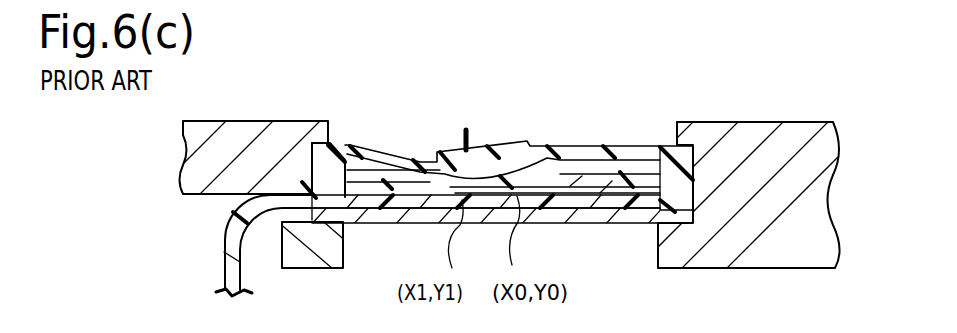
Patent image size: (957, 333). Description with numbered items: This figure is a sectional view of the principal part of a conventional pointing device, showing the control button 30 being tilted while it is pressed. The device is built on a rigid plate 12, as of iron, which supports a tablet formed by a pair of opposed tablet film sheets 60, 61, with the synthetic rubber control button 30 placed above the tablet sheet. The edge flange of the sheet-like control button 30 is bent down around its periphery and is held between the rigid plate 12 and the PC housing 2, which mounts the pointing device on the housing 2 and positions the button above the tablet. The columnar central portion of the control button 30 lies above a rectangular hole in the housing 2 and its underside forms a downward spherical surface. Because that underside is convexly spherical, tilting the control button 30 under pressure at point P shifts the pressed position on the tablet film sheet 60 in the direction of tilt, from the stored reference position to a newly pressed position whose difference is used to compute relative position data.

The PC housing 2 is at (760, 138).
The rigid plate 12 is at (380, 214).
The control button 30 is at (524, 141).
The tablet film sheet 60 is at (623, 150).
The tablet film sheet 61 is at (603, 205).
The pressing point P is at (467, 132).